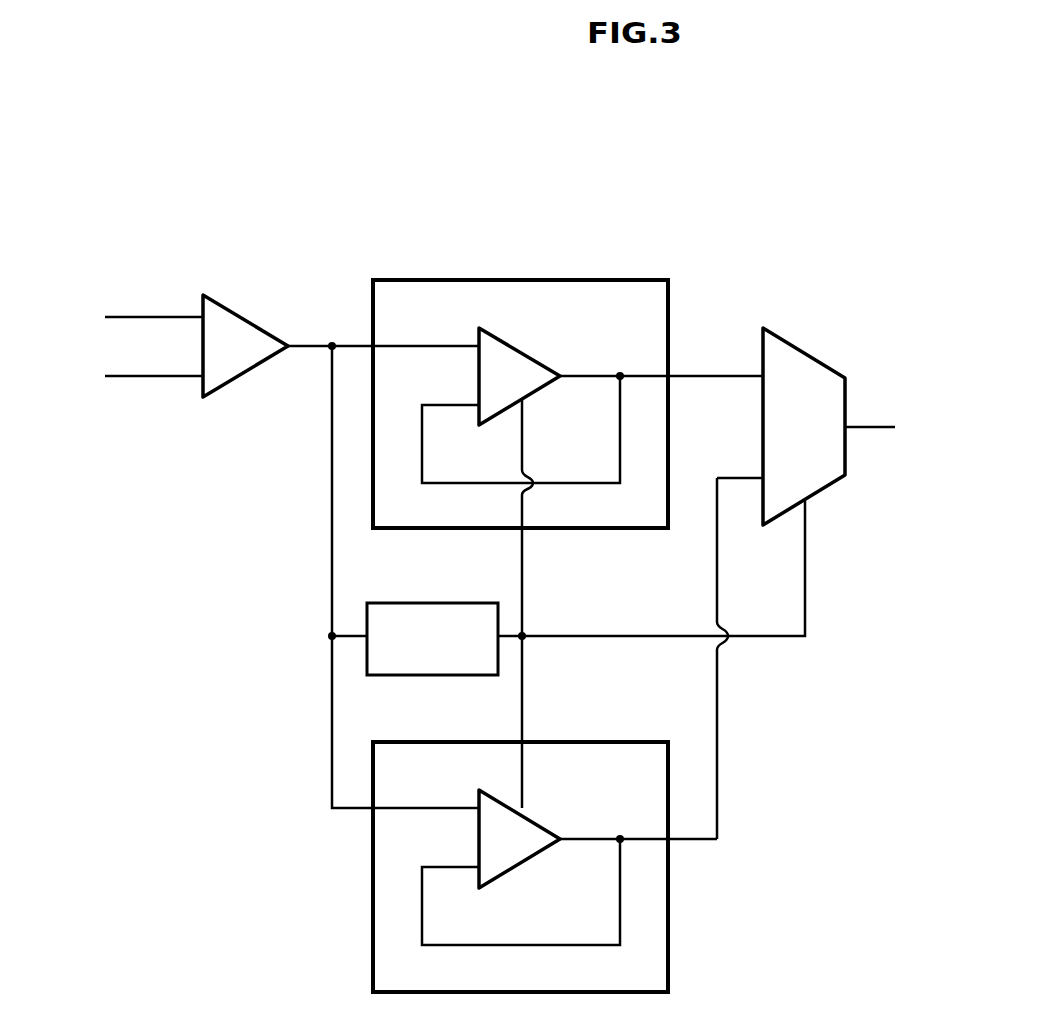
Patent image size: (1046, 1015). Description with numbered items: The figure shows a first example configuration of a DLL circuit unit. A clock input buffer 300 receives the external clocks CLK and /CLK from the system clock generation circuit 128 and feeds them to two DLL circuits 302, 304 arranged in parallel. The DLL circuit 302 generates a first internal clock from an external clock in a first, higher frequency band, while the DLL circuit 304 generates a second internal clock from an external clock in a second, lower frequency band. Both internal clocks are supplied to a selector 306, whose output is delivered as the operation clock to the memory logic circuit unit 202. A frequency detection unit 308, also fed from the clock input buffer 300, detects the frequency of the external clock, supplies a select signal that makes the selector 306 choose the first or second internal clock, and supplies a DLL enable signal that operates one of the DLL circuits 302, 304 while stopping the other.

The system clock generation circuit 128 is at (105, 317).
The clock input buffer 300 is at (243, 322).
The DLL circuit 302 is at (593, 280).
The DLL circuit 304 is at (595, 742).
The selector 306 is at (803, 350).
The frequency detection unit 308 is at (431, 596).
The memory logic circuit unit 202 is at (895, 427).